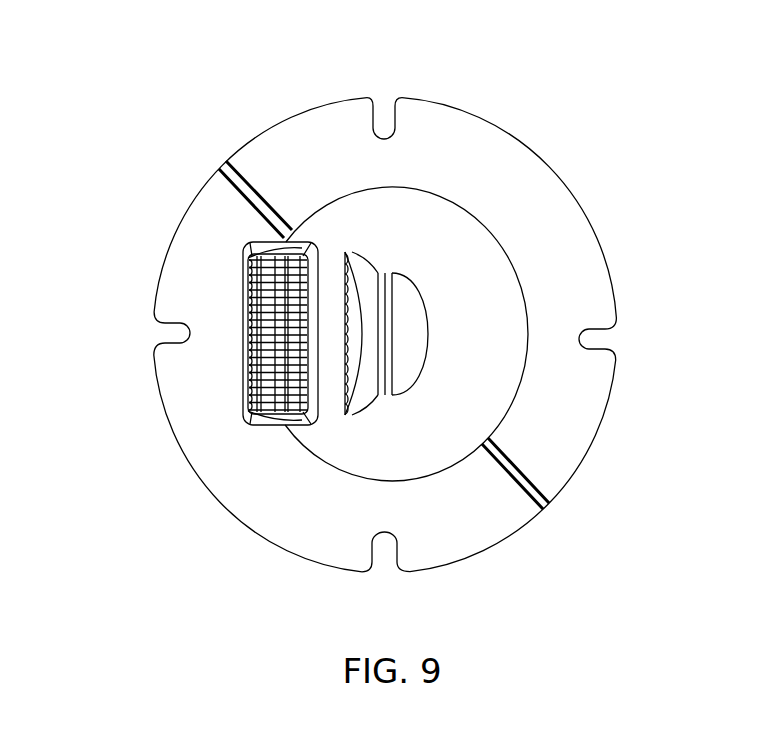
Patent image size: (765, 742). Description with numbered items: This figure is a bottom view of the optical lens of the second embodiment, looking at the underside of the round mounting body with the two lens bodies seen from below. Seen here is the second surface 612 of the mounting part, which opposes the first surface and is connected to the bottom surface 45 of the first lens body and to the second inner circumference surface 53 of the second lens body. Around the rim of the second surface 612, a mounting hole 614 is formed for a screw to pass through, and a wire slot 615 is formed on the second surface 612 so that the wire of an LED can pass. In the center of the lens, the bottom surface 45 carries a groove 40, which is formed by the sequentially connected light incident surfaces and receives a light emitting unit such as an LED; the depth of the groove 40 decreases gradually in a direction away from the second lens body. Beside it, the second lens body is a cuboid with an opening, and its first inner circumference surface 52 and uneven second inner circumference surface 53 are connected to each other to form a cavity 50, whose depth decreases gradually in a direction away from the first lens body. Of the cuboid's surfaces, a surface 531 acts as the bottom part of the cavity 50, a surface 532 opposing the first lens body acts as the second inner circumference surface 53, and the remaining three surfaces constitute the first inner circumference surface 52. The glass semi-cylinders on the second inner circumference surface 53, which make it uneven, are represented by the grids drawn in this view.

The second surface 612 is at (307, 120).
The mounting hole 614 is at (387, 107).
The wire slot 615 is at (220, 168).
The bottom surface 45 is at (483, 390).
The groove 40 is at (370, 347).
The cavity 50 is at (243, 374).
The first inner circumference surface 52 is at (273, 425).
The second inner circumference surface 53 is at (58, 258).
The surface 531 is at (285, 292).
The surface 532 is at (262, 335).